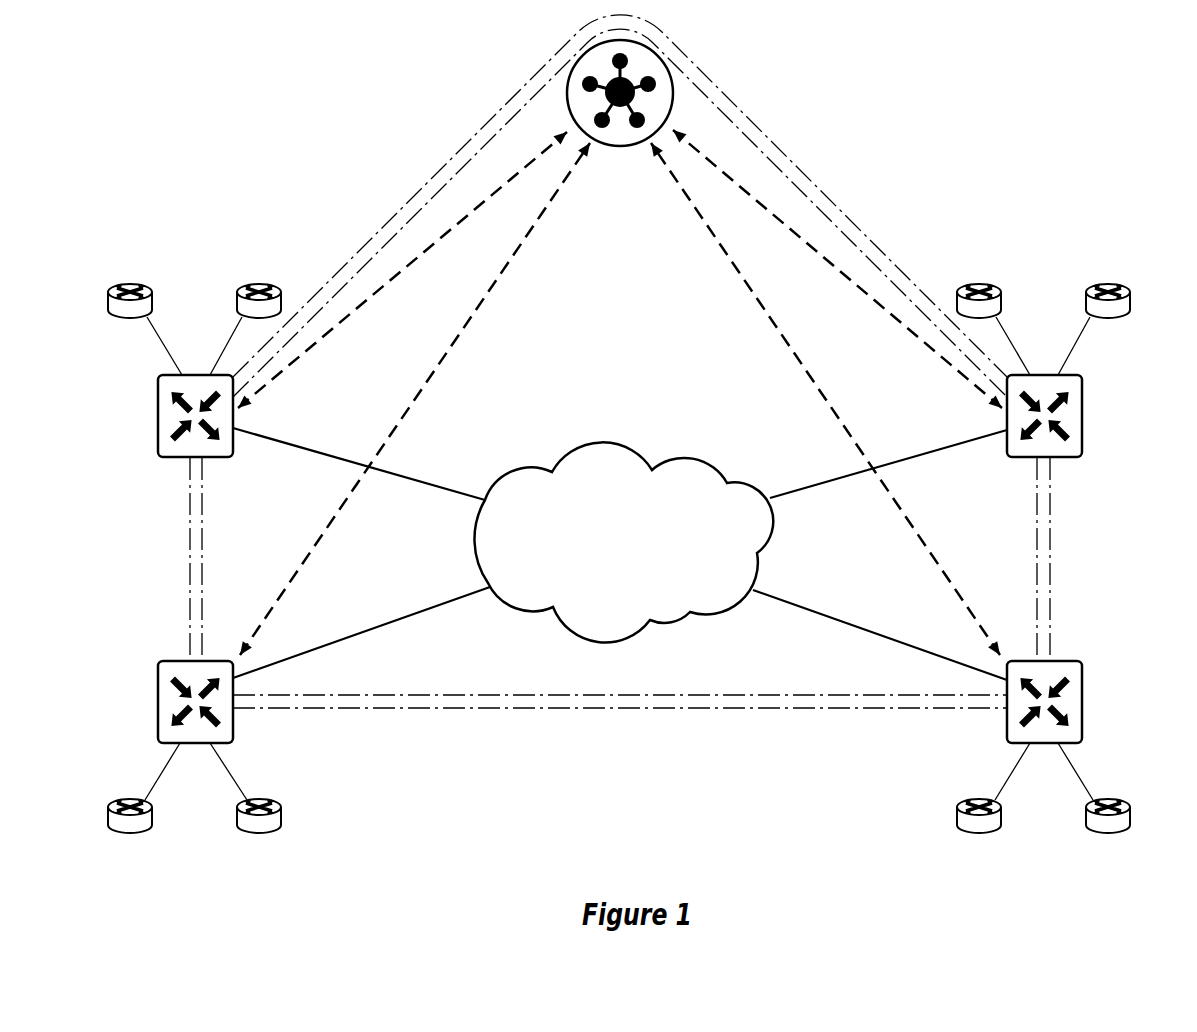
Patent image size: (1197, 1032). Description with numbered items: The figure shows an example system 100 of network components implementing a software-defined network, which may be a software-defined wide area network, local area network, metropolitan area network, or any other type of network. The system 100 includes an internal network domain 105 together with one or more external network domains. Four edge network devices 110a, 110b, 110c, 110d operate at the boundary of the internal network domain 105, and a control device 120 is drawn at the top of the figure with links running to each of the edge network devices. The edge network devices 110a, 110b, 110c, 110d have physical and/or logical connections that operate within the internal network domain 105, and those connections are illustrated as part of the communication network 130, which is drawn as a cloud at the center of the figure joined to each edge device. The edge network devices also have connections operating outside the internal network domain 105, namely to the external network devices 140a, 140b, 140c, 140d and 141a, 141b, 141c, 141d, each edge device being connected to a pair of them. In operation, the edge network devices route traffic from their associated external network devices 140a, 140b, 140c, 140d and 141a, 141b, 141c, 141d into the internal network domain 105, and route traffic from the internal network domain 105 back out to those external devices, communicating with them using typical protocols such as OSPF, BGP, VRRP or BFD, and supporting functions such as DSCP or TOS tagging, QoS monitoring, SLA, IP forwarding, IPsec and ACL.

The system 100 is at (1087, 80).
The internal network domain 105 is at (820, 193).
The edge network device 110a is at (158, 416).
The edge network device 110b is at (158, 702).
The edge network device 110c is at (1082, 416).
The edge network device 110d is at (1082, 702).
The control device 120 is at (670, 88).
The communication network 130 is at (633, 554).
The external network device 140a is at (130, 283).
The external network device 140b is at (130, 835).
The external network device 140c is at (979, 283).
The external network device 140d is at (979, 835).
The external network device 141a is at (259, 283).
The external network device 141b is at (259, 835).
The external network device 141c is at (1108, 283).
The external network device 141d is at (1108, 835).